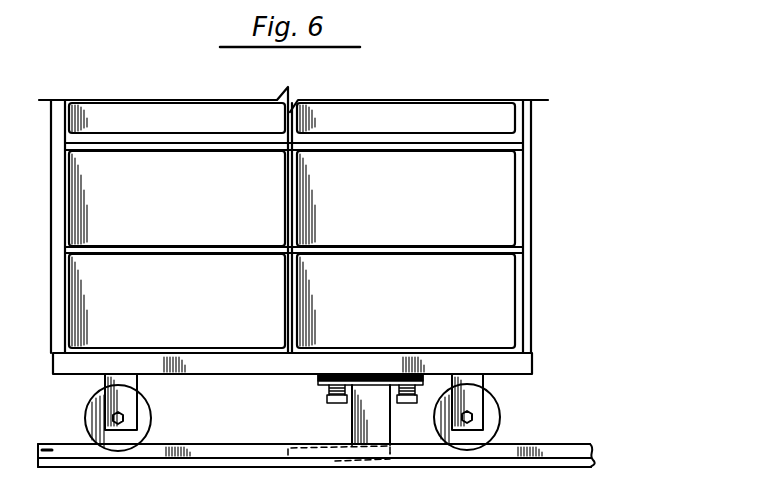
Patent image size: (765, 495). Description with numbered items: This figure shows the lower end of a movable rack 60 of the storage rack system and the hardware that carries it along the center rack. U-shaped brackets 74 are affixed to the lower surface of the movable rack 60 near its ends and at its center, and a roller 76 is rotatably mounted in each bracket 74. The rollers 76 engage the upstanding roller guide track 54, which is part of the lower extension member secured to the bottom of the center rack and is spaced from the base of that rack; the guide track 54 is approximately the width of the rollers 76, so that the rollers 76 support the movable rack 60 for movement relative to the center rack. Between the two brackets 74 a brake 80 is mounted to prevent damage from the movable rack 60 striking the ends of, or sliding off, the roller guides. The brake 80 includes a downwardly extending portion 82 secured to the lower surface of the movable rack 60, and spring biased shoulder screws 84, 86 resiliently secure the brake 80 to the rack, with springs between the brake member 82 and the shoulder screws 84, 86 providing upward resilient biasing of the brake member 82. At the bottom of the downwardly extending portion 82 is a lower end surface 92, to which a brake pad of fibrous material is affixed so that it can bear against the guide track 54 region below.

The upstanding roller guide track 54 is at (565, 445).
The movable rack 60 is at (533, 240).
The U-shaped bracket 74 is at (105, 386).
The roller 76 is at (150, 420).
The brake 80 is at (330, 424).
The downwardly extending portion 82 is at (392, 420).
The spring biased shoulder screw 84 is at (325, 393).
The spring biased shoulder screw 86 is at (408, 404).
The lower end surface 92 is at (386, 462).